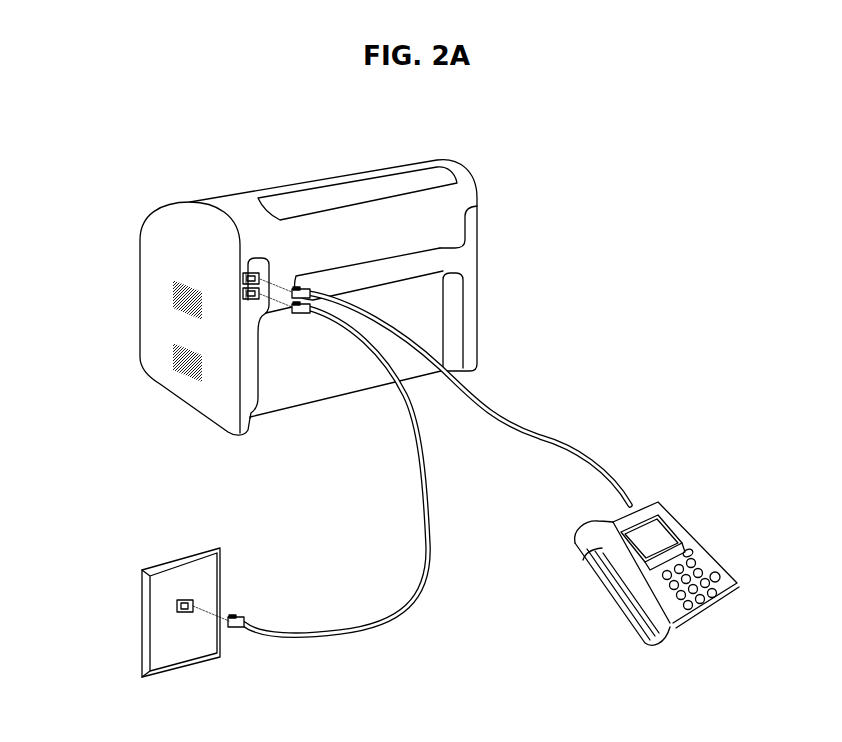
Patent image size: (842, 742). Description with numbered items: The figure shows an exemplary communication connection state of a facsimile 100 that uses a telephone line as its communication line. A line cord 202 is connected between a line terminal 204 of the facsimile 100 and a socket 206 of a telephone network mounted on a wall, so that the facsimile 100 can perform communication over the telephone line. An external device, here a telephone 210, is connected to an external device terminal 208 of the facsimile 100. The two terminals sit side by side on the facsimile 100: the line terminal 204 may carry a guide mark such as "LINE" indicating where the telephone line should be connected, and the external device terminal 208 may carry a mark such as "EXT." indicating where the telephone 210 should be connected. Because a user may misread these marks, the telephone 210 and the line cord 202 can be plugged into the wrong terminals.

The facsimile 100 is at (643, 223).
The line cord 202 is at (347, 627).
The line terminal 204 is at (245, 297).
The socket 206 is at (185, 580).
The external device terminal 208 is at (243, 279).
The telephone 210 is at (656, 506).